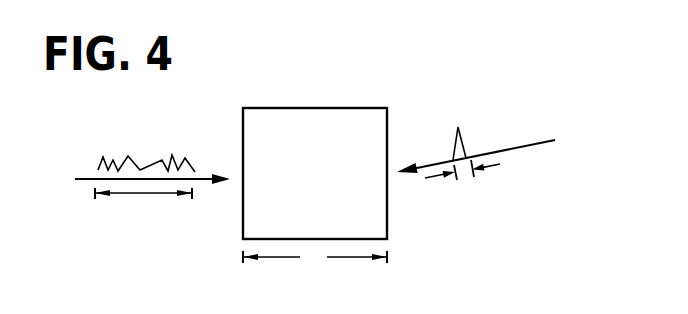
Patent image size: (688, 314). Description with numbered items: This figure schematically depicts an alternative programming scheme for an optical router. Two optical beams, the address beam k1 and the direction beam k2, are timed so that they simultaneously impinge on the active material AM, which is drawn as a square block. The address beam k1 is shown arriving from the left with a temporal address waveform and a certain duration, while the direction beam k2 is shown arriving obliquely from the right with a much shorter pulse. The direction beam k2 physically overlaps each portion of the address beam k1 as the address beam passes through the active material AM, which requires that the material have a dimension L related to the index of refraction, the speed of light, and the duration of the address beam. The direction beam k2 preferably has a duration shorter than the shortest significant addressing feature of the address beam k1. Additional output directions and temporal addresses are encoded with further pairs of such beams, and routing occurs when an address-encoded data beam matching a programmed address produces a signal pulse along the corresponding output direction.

The active material AM is at (308, 90).
The address beam k1 is at (129, 147).
The direction beam k2 is at (490, 134).
The dimension of the active material L is at (315, 262).